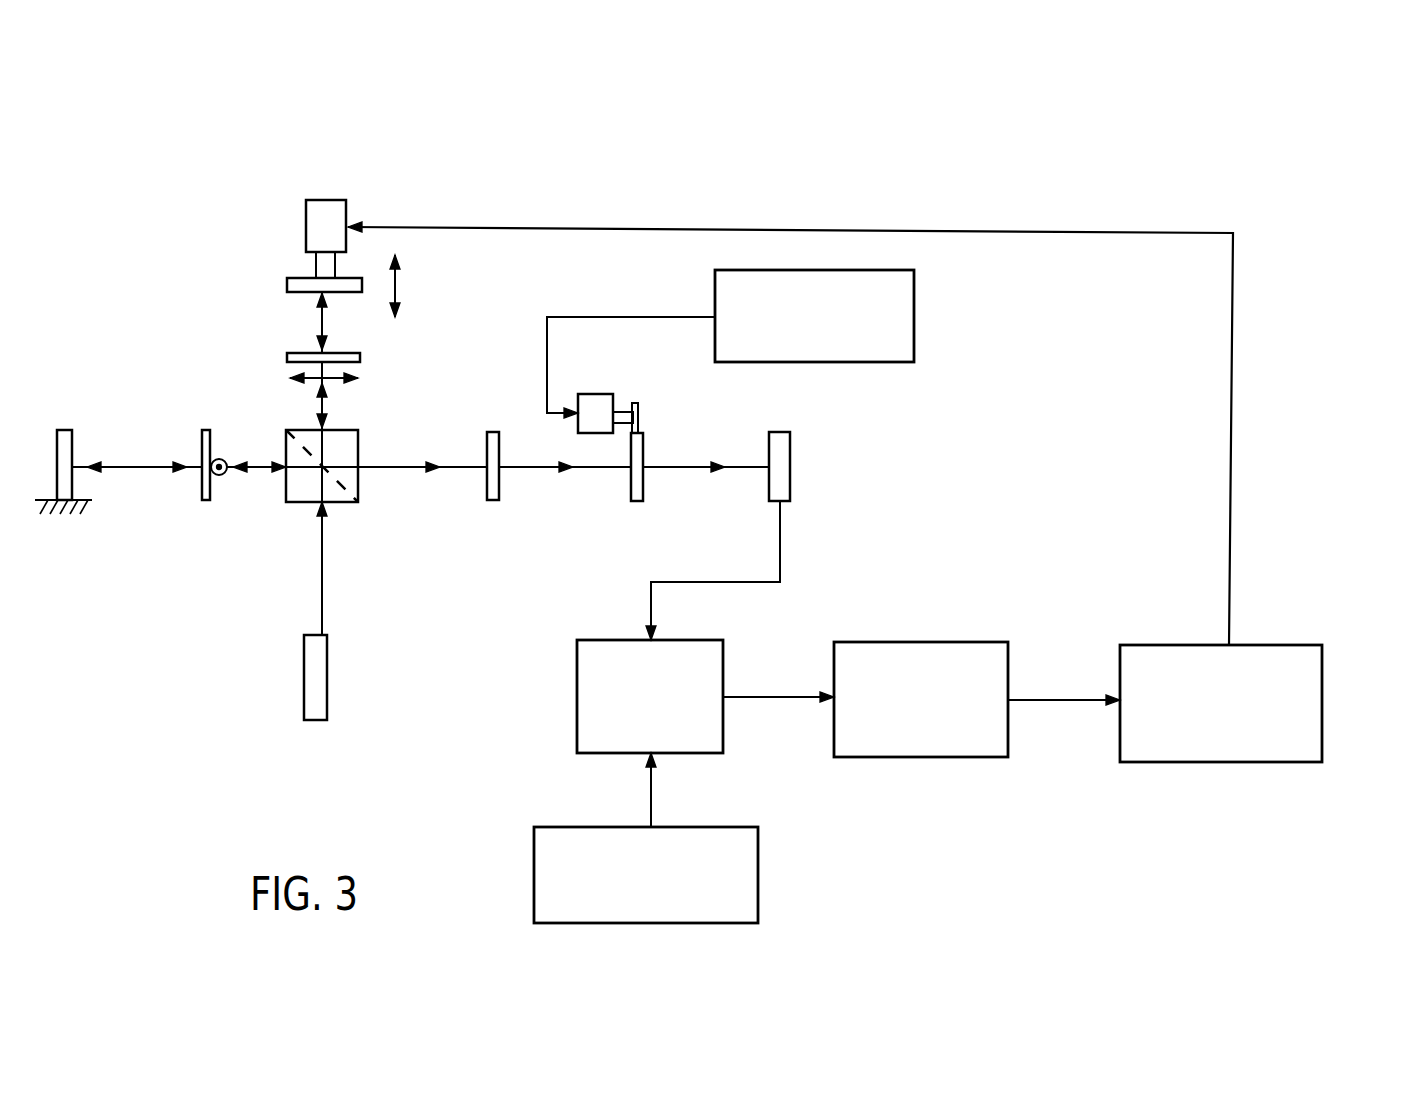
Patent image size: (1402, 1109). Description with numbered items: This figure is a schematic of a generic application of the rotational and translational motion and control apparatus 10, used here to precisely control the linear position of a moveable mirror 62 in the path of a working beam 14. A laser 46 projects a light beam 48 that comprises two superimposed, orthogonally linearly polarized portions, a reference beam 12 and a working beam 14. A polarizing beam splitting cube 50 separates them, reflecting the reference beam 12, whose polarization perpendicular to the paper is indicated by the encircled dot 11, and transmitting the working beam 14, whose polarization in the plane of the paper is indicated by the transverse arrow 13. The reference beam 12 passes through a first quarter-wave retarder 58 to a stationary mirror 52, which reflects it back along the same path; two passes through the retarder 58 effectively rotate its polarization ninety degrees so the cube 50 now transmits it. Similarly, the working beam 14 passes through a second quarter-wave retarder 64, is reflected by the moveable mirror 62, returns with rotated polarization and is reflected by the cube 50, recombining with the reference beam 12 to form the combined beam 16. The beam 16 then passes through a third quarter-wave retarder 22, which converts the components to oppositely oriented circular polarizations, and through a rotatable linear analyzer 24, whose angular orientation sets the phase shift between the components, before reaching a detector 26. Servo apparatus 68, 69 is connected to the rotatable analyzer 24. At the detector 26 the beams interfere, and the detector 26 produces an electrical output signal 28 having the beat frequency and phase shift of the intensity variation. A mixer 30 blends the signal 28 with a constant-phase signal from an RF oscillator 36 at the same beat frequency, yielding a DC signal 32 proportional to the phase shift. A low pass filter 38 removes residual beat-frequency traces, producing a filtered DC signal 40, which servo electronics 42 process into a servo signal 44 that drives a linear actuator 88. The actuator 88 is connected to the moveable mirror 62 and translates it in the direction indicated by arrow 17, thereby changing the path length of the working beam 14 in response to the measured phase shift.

The motion and control apparatus 10 is at (1270, 281).
The encircled dot 11 is at (225, 458).
The reference beam 12 is at (125, 470).
The transverse arrow 13 is at (335, 382).
The working beam 14 is at (317, 402).
The optical beam 16 is at (383, 463).
The arrow 17 is at (400, 281).
The quarter wave retarder plate 22 is at (493, 500).
The rotatable linear polarizer or analyzer 24 is at (638, 500).
The detector 26 is at (783, 433).
The output signal 28 is at (712, 585).
The mixer 30 is at (575, 723).
The DC signal 32 is at (768, 699).
The RF oscillator 36 is at (758, 851).
The low pass filter 38 is at (930, 757).
The filtered DC signal 40 is at (1060, 702).
The servo electronics 42 is at (1322, 668).
The servo signal 44 is at (1231, 522).
The laser 46 is at (303, 654).
The light beam 48 is at (315, 576).
The polarizing beam splitting cube 50 is at (342, 500).
The stationary mirror 52 is at (67, 425).
The first ¼-wave retarder 58 is at (207, 502).
The moveable mirror 62 is at (287, 281).
The second ¼-wave retarder 64 is at (360, 353).
The servo apparatus 68 is at (597, 393).
The servo apparatus 69 is at (914, 297).
The linear actuator 88 is at (305, 215).